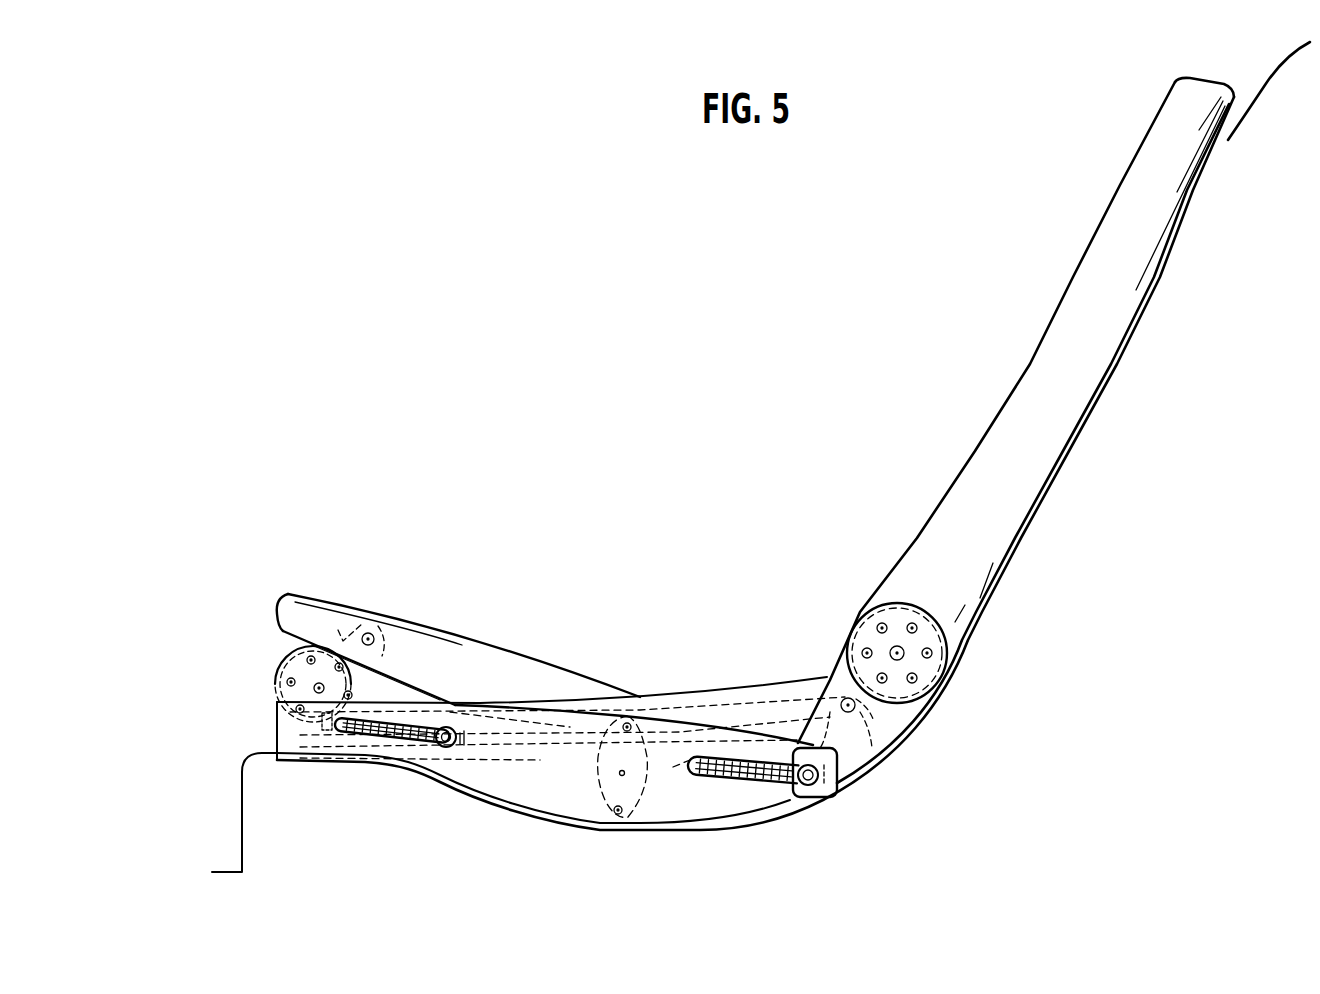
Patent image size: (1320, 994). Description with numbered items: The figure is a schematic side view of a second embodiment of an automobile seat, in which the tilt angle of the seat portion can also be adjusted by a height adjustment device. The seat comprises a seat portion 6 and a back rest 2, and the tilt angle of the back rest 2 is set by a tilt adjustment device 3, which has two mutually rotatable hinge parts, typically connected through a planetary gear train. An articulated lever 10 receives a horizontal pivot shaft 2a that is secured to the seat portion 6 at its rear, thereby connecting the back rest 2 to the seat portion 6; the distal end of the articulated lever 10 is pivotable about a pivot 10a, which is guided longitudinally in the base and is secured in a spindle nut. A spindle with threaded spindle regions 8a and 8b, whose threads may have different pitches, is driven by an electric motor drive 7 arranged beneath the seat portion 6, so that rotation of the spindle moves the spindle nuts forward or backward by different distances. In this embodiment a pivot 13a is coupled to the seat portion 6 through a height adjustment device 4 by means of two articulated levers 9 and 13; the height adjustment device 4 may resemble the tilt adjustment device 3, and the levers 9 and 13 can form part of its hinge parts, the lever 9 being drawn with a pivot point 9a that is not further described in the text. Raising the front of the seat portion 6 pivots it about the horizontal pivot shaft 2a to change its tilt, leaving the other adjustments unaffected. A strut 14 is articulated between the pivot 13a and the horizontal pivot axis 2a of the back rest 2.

The back rest 2 is at (1036, 361).
The horizontal pivot shaft 2a is at (844, 698).
The tilt adjustment device 3 is at (922, 606).
The height adjustment device 4 is at (274, 676).
The seat portion 6 is at (450, 643).
The electric motor drive 7 is at (645, 813).
The threaded spindle region 8a is at (550, 757).
The threaded spindle region 8b is at (673, 767).
The articulated lever 9 is at (347, 600).
The seat pan pivot 9a is at (372, 633).
The articulated lever 10 is at (895, 735).
The pivot 10a is at (815, 798).
The articulation lever 13 is at (350, 712).
The pivot 13a is at (445, 747).
The strut 14 is at (602, 701).